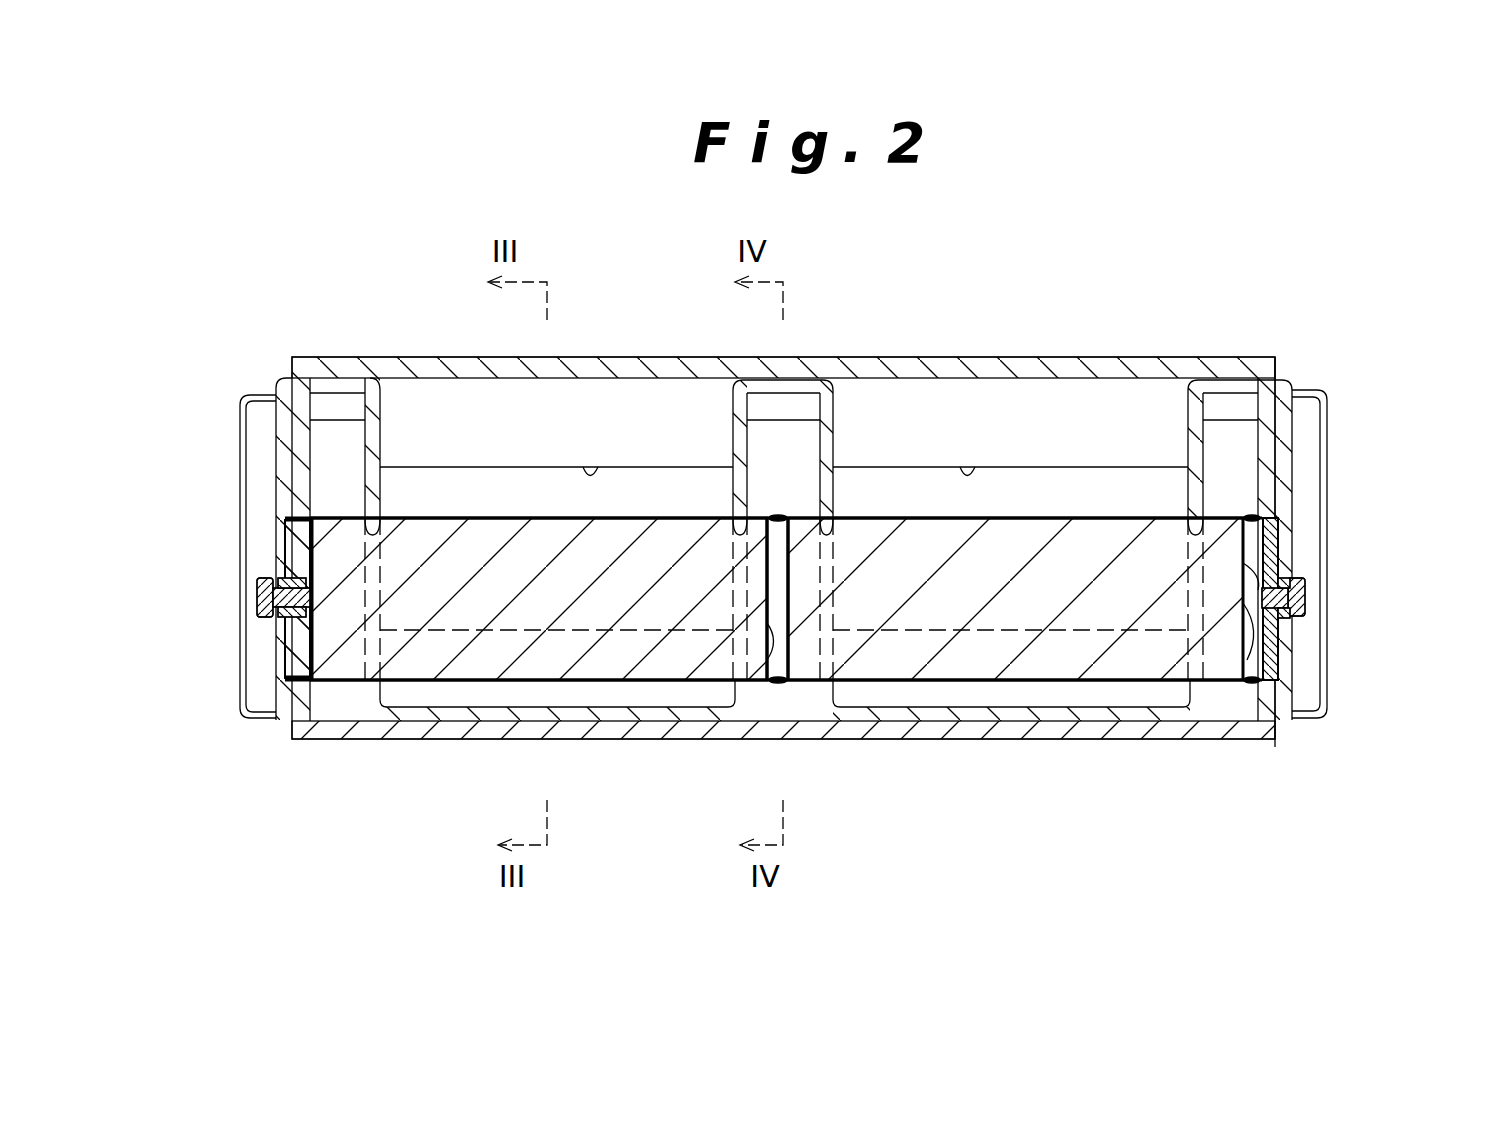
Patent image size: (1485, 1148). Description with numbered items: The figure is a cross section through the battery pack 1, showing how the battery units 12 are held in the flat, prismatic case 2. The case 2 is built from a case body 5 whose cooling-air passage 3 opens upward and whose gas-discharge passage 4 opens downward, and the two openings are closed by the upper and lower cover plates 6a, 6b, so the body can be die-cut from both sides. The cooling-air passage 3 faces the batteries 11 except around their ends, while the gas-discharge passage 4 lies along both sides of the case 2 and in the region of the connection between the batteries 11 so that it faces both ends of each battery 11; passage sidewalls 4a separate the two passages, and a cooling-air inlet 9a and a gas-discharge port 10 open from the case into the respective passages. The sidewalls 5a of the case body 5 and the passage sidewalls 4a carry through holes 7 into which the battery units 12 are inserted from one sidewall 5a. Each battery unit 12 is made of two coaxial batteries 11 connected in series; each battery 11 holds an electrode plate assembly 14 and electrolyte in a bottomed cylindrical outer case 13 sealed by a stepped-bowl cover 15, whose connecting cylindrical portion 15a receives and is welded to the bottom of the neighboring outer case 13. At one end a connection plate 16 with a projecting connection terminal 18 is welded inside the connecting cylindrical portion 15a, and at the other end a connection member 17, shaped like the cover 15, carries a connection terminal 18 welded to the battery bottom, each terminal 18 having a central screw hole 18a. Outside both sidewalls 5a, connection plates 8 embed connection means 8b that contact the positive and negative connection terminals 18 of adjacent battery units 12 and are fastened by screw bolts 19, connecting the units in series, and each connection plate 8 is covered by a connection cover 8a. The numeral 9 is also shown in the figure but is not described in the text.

The battery pack 1 is at (283, 296).
The case 2 is at (1153, 354).
The cooling-air passage 3 is at (521, 452).
The gas-discharge passage 4 is at (318, 490).
The passage sidewall 4a is at (380, 437).
The case body 5 is at (1232, 376).
The sidewall 5a is at (288, 482).
The cover plate 6a is at (1005, 370).
The cover plate 6b is at (1035, 740).
The through hole 7 is at (288, 545).
The connection plate 8 is at (285, 433).
The connection cover 8a is at (257, 590).
The connection means 8b is at (275, 614).
The terminal 9 is at (1305, 603).
The cooling-air inlet 9a is at (590, 467).
The gas-discharge port 10 is at (333, 400).
The battery 11 is at (628, 700).
The battery unit 12 is at (1088, 508).
The outer case 13 is at (474, 700).
The electrode plate assembly 14 is at (490, 605).
The cover 15 is at (752, 690).
The connecting cylindrical portion 15a is at (782, 700).
The connection plate 16 is at (1282, 648).
The connection member 17 is at (283, 672).
The connection terminal 18 is at (290, 640).
The screw hole 18a is at (315, 605).
The screw bolt 19 is at (265, 604).